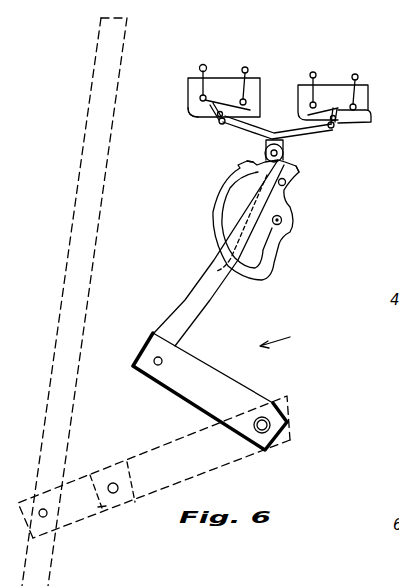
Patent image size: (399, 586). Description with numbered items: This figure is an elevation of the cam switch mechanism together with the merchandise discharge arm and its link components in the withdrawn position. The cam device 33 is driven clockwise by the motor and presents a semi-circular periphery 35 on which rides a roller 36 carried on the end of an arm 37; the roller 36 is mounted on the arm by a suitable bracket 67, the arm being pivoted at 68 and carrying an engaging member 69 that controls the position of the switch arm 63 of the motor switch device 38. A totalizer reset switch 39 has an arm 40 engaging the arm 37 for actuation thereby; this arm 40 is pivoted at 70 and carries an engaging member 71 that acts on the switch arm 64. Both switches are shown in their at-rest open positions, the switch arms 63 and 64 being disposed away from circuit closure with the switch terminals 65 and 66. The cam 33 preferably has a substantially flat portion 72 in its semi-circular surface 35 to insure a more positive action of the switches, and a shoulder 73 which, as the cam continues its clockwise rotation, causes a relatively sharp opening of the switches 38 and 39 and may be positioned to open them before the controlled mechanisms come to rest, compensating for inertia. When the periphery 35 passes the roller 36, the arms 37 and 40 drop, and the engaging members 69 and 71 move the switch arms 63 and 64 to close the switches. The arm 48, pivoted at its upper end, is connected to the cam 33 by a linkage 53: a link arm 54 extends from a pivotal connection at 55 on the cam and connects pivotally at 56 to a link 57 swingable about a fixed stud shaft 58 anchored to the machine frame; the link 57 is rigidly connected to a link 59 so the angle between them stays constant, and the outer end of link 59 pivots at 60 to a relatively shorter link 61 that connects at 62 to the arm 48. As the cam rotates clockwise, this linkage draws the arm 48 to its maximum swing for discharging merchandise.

The cam device 33 is at (278, 258).
The semi-circular periphery 35 is at (213, 213).
The roller 36 is at (267, 214).
The arm 37 is at (240, 131).
The motor switch device 38 is at (221, 82).
The totalizer reset switch 39 is at (347, 97).
The arm 40 is at (329, 128).
The arm 48 is at (92, 273).
The linkage 53 is at (284, 333).
The link arm 54 is at (215, 308).
The pivotal connection 55 is at (286, 182).
The pivotal connection 56 is at (154, 359).
The link 57 is at (232, 388).
The fixed stud shaft 58 is at (277, 417).
The link 59 is at (218, 474).
The pivotal connection 60 is at (112, 483).
The link 61 is at (74, 528).
The pivotal connection 62 is at (47, 512).
The switch arm 63 is at (220, 108).
The switch arm 64 is at (327, 108).
The switch terminal 65 is at (247, 102).
The switch terminal 66 is at (360, 104).
The bracket 67 is at (265, 151).
The pivot 68 is at (217, 121).
The engaging member 69 is at (188, 111).
The pivot 70 is at (340, 127).
The engaging member 71 is at (371, 118).
The flat portion 72 is at (240, 163).
The shoulder 73 is at (299, 172).